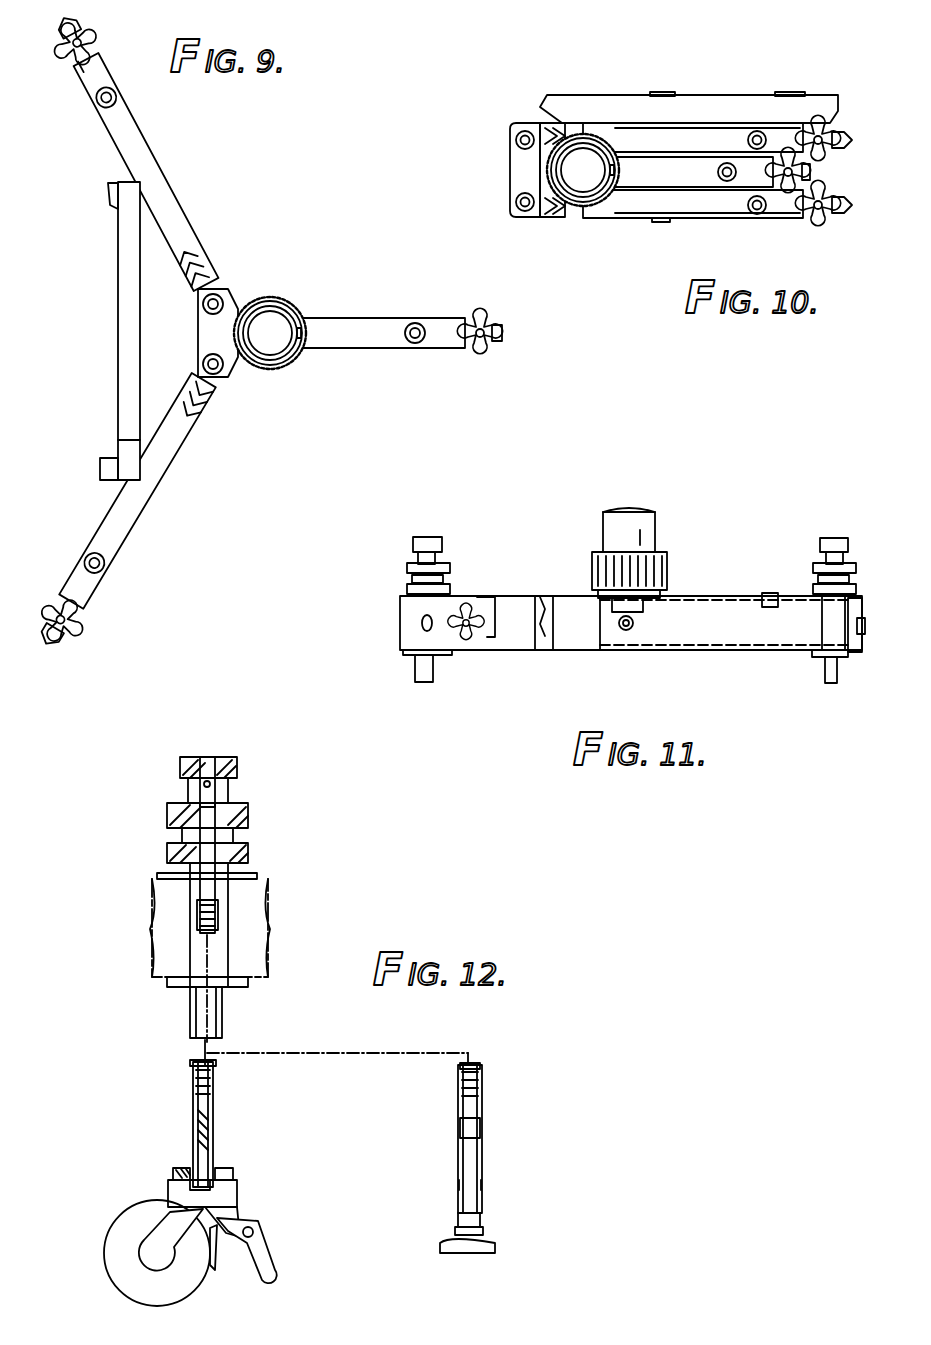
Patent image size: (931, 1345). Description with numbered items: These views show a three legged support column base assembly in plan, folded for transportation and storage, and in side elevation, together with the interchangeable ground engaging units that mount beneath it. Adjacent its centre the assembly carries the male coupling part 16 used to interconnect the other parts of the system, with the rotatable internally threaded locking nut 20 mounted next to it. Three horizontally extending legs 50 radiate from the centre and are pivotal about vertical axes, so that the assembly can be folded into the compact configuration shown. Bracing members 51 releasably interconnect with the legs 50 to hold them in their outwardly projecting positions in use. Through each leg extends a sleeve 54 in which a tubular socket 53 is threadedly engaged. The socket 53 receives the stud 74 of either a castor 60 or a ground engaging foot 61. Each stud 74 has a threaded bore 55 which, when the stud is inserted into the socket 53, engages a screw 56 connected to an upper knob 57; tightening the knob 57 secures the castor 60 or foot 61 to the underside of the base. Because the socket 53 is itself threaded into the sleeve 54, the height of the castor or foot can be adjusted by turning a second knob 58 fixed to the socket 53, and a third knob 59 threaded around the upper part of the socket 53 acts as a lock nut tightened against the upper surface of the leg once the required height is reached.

In FIG. 9, the male coupling part 16 is at (272, 322).
In FIG. 10, the male coupling part 16 is at (583, 170).
In FIG. 11, the male coupling part 16 is at (655, 526).
In FIG. 11, the locking nut 20 is at (667, 570).
In FIG. 9, the legs 50 is at (140, 143).
In FIG. 10, the legs 50 is at (631, 210).
In FIG. 9, the bracing members 51 is at (118, 310).
In FIG. 12, the tubular socket 53 is at (190, 1041).
In FIG. 12, the sleeve 54 is at (177, 985).
In FIG. 12, the threaded bore 55 is at (205, 1062).
In FIG. 12, the screw 56 is at (217, 925).
In FIG. 12, the upper knob 57 is at (235, 762).
In FIG. 12, the second knob 58 is at (248, 803).
In FIG. 12, the third knob 59 is at (167, 855).
In FIG. 12, the castor 60 is at (130, 1225).
In FIG. 12, the foot 61 is at (483, 1239).
In FIG. 12, the stud 74 is at (213, 1115).